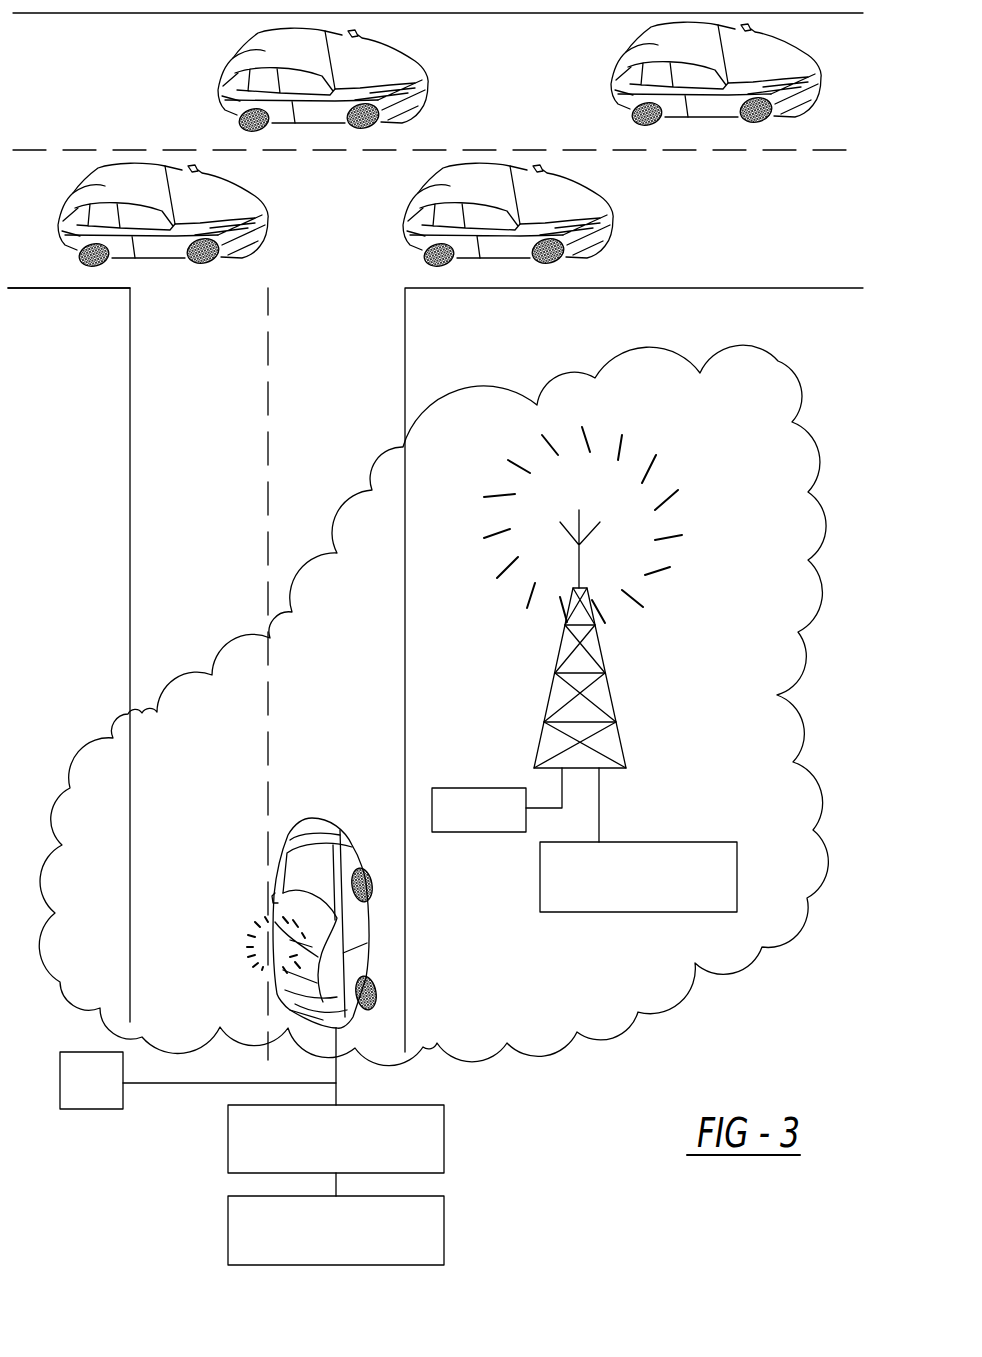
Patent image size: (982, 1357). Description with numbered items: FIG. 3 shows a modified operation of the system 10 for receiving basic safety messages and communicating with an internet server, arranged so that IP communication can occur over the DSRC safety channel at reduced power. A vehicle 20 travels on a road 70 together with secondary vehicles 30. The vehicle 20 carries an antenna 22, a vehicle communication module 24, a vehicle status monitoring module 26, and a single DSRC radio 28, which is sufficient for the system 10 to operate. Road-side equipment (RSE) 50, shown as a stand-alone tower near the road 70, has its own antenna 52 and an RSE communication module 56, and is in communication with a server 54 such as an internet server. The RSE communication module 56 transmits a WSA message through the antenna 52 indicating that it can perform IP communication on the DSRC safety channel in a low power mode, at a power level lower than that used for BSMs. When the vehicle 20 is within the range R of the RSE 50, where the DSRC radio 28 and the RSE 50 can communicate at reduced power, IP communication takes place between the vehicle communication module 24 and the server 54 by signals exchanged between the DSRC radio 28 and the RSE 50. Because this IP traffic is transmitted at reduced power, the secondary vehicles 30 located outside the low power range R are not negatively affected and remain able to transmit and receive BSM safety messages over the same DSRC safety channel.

The system 10 is at (98, 1193).
The vehicle 20 is at (358, 1011).
The antenna 22 is at (280, 948).
The vehicle communication module 24 is at (443, 1157).
The vehicle status monitoring module 26 is at (443, 1247).
The dedicated short range communication (DSRC) radio 28 is at (97, 1111).
The secondary vehicles 30 is at (233, 63).
The road-side equipment (RSE) 50 is at (565, 632).
The antenna 52 is at (580, 555).
The server 54 is at (480, 787).
The RSE communication module 56 is at (714, 840).
The road 70 is at (150, 370).
The range R is at (778, 361).